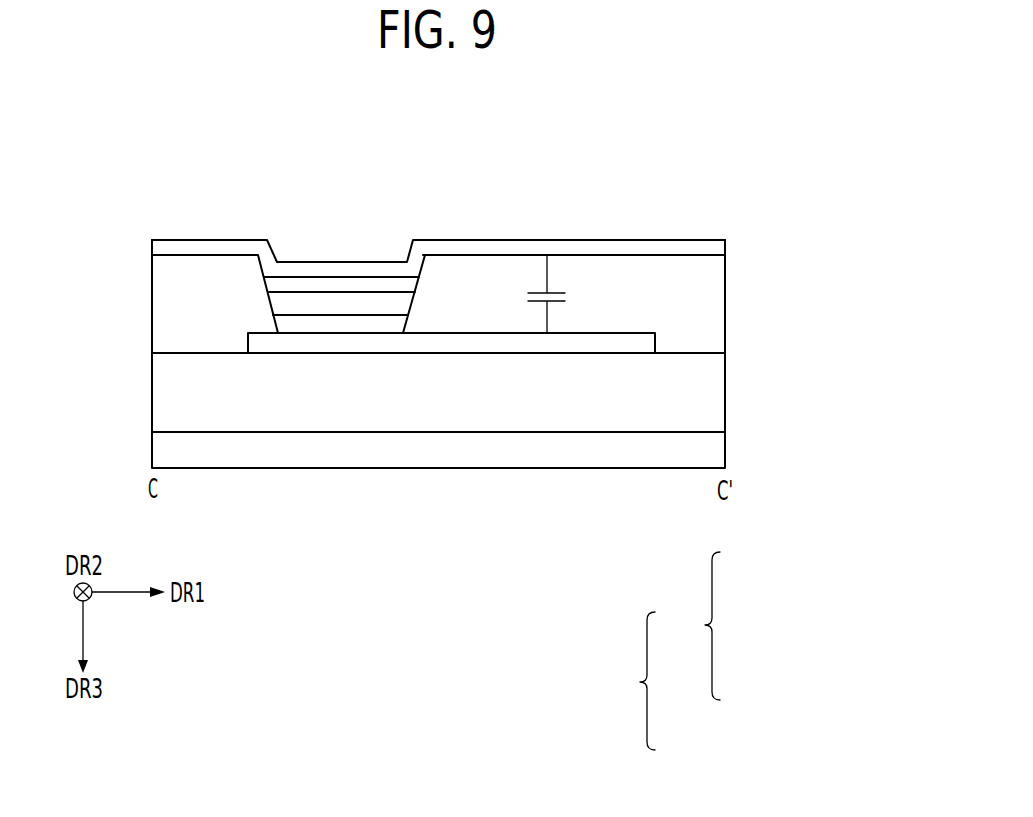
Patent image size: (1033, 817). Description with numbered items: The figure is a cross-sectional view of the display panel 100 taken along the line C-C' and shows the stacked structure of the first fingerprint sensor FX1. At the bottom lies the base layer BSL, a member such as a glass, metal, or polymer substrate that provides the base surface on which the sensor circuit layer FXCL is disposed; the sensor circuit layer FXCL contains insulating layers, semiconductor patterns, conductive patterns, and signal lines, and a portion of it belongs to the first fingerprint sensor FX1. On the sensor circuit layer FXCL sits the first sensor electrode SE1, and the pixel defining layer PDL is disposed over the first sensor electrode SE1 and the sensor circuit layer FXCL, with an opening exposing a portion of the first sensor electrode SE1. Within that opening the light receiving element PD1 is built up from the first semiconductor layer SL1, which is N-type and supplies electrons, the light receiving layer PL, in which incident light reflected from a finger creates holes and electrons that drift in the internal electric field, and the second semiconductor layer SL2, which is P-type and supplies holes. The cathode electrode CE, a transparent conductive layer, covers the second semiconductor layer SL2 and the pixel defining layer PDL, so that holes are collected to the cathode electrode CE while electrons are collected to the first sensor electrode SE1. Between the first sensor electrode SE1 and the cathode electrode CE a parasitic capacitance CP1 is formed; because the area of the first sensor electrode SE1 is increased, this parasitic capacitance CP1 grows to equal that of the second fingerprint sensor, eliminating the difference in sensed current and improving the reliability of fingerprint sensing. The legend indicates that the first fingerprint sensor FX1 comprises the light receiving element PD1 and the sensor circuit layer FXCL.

The display panel 100 is at (686, 188).
The cathode electrode CE is at (720, 249).
The pixel defining layer PDL is at (720, 296).
The sensor circuit layer FXCL is at (720, 390).
The base layer BSL is at (720, 450).
The first sensor electrode SE1 is at (595, 347).
The first semiconductor layer SL1 is at (283, 330).
The light receiving layer PL is at (280, 311).
The second semiconductor layer SL2 is at (277, 285).
The parasitic capacitance CP1 is at (565, 294).
The first fingerprint sensor FX1 is at (656, 681).
The light receiving element PD1 is at (712, 626).